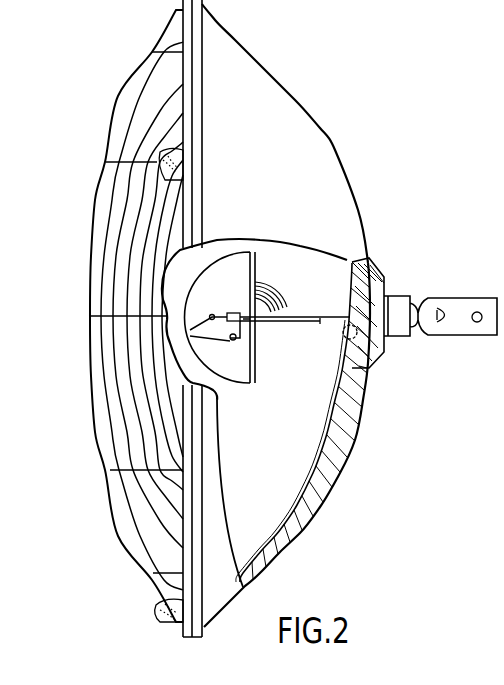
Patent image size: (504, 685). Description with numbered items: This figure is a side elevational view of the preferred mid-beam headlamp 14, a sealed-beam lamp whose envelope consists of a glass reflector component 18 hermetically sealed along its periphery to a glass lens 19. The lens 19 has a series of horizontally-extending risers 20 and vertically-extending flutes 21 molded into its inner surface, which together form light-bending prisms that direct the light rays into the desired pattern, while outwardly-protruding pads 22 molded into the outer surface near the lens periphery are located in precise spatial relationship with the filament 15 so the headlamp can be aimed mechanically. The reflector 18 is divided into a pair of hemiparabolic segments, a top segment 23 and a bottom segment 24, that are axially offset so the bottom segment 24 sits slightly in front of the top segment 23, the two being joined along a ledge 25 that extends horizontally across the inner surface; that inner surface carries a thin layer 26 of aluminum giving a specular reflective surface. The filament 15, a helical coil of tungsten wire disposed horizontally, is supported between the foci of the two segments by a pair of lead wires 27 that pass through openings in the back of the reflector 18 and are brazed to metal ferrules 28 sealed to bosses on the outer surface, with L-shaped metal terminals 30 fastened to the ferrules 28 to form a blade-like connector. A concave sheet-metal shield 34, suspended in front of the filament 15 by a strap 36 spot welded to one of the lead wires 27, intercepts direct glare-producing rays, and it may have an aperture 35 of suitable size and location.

The mid-beam headlamp 14 is at (338, 95).
The glass reflector component 18 is at (335, 152).
The glass lens 19 is at (137, 551).
The risers 20 is at (93, 298).
The flutes 21 is at (133, 499).
The pads 22 is at (174, 158).
The top segment 23 is at (363, 270).
The bottom segment 24 is at (324, 494).
The ledge 25 is at (348, 333).
The layer of aluminum 26 is at (309, 475).
The lead wires 27 is at (303, 315).
The metal ferrules 28 is at (399, 328).
The L-shaped metal terminals 30 is at (457, 335).
The concave shield 34 is at (193, 292).
The aperture 35 is at (236, 339).
The strap 36 is at (276, 293).
The filament 15 is at (211, 314).